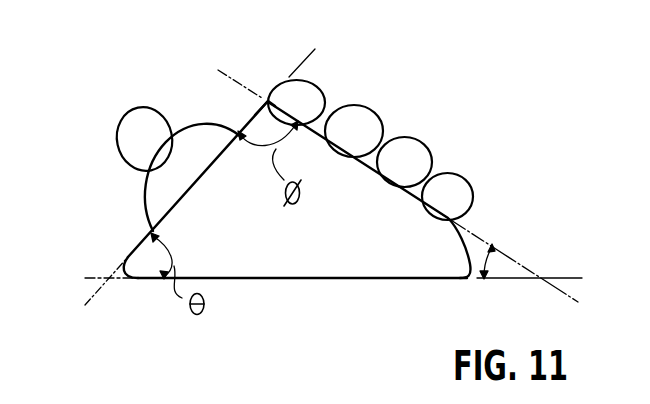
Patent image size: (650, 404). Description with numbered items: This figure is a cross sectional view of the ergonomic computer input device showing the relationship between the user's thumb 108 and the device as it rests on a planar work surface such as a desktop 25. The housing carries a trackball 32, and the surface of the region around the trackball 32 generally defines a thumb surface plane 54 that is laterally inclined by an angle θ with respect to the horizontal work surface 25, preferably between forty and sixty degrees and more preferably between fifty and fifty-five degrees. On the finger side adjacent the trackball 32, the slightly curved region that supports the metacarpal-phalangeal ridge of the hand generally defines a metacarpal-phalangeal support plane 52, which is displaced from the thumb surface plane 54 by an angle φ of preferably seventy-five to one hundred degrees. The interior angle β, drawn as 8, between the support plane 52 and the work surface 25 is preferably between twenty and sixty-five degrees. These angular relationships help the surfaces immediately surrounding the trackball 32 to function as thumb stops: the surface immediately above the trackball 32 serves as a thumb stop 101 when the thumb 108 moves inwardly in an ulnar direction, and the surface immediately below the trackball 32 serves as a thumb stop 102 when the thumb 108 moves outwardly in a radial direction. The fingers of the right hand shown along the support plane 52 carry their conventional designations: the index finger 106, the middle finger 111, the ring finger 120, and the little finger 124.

The angle between sloped surface and support plane 8 is at (492, 258).
The desktop 25 is at (87, 277).
The trackball 32 is at (147, 193).
The metacarpal-phalangeal support plane 52 is at (474, 236).
The thumb surface plane 54 is at (300, 64).
The thumb stop 101 is at (247, 124).
The thumb stop 102 is at (153, 230).
The index finger 106 is at (325, 85).
The thumb 108 is at (133, 126).
The middle finger 111 is at (368, 117).
The ring finger 120 is at (417, 152).
The little finger 124 is at (458, 193).